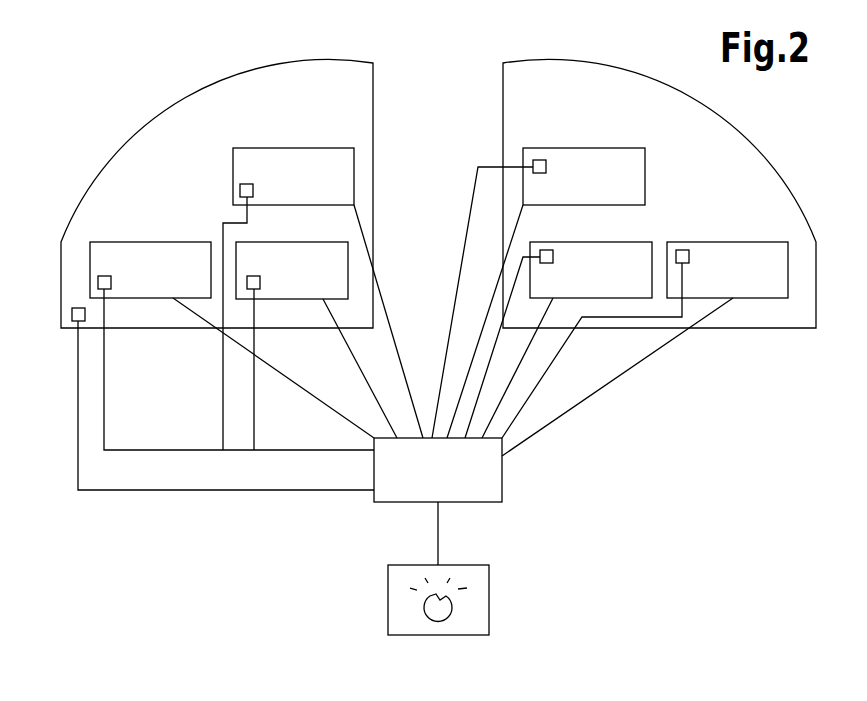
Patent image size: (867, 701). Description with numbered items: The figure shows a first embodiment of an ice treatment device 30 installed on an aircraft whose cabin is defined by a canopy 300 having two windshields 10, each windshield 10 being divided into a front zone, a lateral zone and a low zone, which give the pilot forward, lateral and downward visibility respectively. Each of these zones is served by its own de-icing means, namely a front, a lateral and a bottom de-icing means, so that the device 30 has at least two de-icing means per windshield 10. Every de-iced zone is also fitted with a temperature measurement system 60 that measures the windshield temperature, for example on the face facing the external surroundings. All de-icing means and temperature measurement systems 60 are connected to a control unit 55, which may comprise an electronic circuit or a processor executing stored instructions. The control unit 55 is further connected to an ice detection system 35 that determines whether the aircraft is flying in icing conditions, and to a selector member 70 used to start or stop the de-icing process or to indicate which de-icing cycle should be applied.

The canopy 300 is at (438, 164).
The windshield 10 is at (348, 63).
The temperature measurement system 60 is at (240, 191).
The ice detection system 35 is at (72, 315).
The ice treatment device 30 is at (405, 401).
The control unit 55 is at (502, 478).
The selector member 70 is at (388, 590).